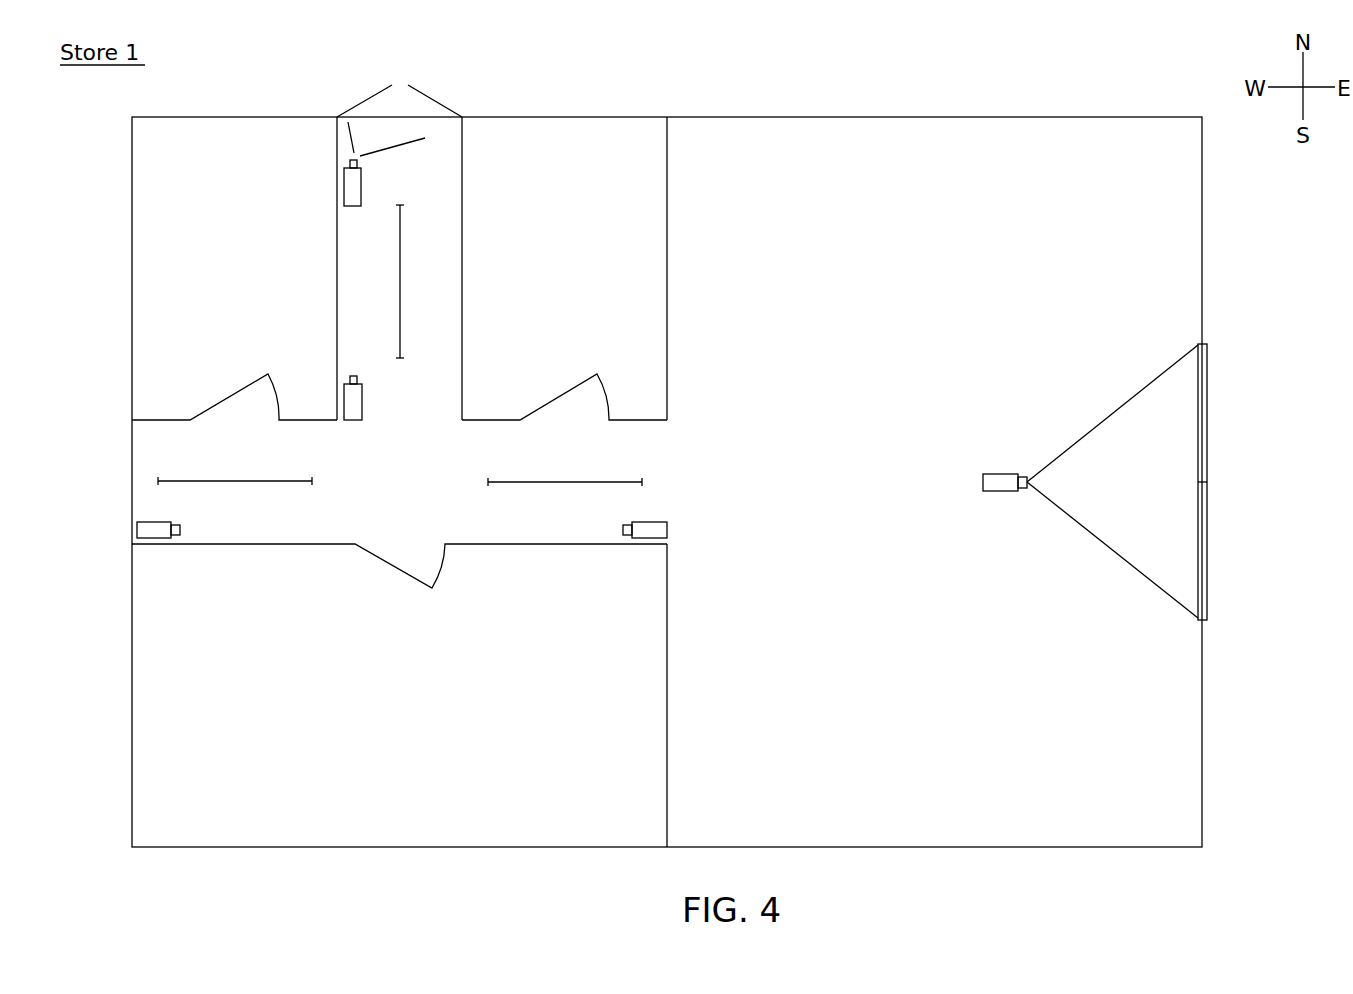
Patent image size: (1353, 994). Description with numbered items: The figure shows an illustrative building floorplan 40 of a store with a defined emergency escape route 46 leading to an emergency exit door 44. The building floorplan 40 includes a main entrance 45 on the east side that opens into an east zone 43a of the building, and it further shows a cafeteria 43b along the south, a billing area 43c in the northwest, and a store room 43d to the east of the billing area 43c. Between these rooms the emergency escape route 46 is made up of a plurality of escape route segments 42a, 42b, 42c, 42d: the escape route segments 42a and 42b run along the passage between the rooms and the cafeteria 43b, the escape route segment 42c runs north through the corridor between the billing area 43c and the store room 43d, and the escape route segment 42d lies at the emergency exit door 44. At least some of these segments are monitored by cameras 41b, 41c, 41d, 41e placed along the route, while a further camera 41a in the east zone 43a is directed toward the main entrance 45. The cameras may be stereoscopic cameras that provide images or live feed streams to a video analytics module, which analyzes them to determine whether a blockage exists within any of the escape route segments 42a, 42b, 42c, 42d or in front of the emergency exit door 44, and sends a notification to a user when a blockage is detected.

The building floorplan 40 is at (325, 77).
The emergency exit door 44 is at (428, 82).
The escape route segment 42d is at (393, 147).
The camera 41e is at (345, 185).
The billing area 43c is at (155, 266).
The camera 41d is at (345, 393).
The escape route segment 42c is at (400, 282).
The store room 43d is at (640, 268).
The escape route segment 42b is at (235, 481).
The escape route segment 42a is at (565, 482).
The emergency escape route 46 is at (663, 458).
The camera 41c is at (153, 522).
The camera 41b is at (667, 528).
The cafeteria 43b is at (155, 712).
The east zone 43a is at (1177, 680).
The camera 41a is at (1000, 474).
The main entrance 45 is at (1215, 410).